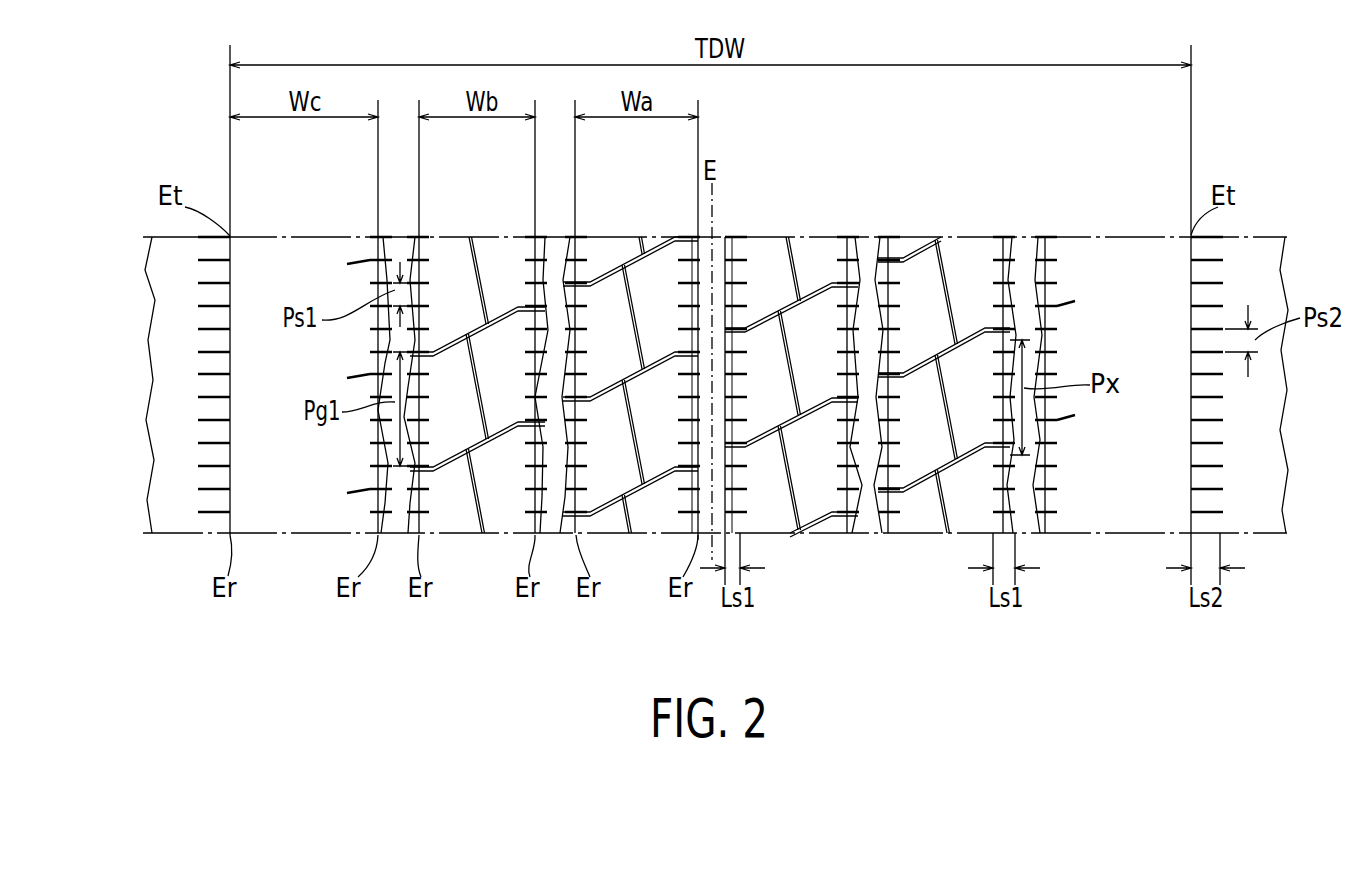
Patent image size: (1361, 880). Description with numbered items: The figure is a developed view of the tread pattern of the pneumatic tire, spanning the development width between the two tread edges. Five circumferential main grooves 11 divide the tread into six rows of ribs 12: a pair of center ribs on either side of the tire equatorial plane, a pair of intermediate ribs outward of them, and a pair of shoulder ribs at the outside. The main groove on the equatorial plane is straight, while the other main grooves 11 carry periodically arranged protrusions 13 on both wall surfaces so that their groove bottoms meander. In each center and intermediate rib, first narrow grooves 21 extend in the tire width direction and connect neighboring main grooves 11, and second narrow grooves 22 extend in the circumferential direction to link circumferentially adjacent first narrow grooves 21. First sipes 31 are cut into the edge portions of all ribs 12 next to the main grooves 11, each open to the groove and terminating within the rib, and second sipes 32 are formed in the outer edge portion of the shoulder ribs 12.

The main groove 11 is at (397, 248).
The rib 12 is at (252, 253).
The protrusion 13 is at (398, 528).
The first narrow groove 21 is at (503, 303).
The second narrow groove 22 is at (483, 268).
The first sipe 31 is at (425, 490).
The second sipe 32 is at (207, 514).